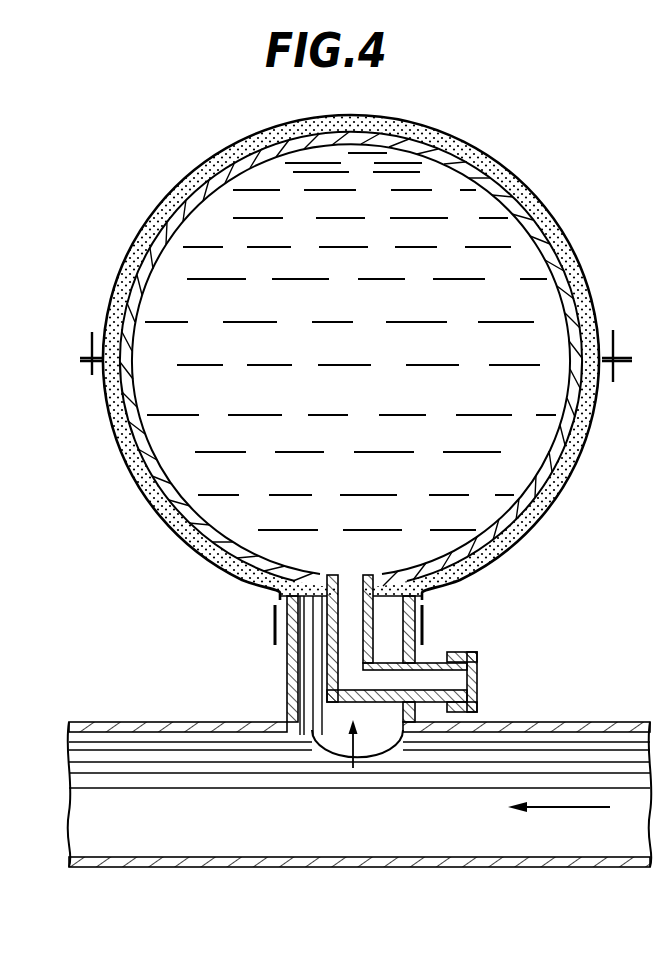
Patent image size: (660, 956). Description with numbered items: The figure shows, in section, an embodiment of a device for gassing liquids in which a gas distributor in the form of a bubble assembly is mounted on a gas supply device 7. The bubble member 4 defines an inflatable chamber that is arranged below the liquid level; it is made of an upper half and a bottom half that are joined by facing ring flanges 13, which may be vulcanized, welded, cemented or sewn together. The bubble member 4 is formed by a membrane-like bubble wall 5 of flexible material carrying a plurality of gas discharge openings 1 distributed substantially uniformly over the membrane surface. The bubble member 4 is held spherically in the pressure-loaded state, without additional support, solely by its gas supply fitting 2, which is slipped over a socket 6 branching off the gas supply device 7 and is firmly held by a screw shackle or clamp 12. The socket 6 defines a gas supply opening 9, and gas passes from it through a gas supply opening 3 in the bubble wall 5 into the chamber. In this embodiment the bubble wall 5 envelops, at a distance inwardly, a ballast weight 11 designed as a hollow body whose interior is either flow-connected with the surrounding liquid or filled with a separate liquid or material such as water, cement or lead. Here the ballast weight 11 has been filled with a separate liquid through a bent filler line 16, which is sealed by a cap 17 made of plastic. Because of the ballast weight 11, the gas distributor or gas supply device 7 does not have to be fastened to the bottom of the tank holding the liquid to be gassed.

The gas discharge openings 1 is at (441, 137).
The gas supply fitting 2 is at (272, 597).
The gas supply opening 3 is at (407, 582).
The bubble member 4 is at (534, 186).
The bubble wall 5 is at (588, 432).
The socket 6 is at (288, 698).
The gas supply device 7 is at (562, 714).
The gas supply opening 9 is at (332, 745).
The ballast weight 11 is at (524, 275).
The screw shackle or clamp 12 is at (427, 621).
The ring flanges 13 is at (614, 336).
The bent filler line 16 is at (323, 638).
The cap 17 is at (480, 670).